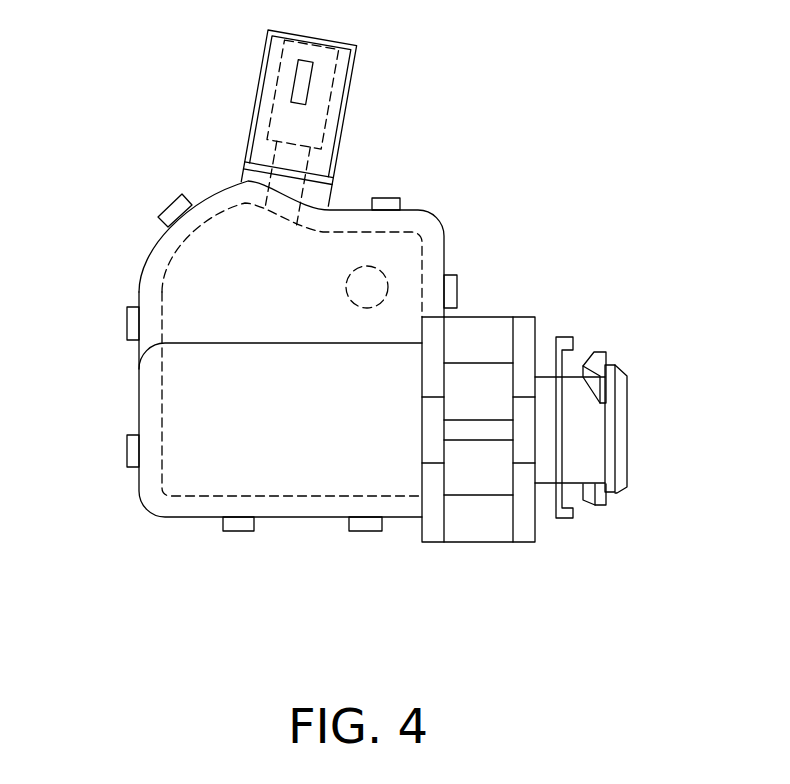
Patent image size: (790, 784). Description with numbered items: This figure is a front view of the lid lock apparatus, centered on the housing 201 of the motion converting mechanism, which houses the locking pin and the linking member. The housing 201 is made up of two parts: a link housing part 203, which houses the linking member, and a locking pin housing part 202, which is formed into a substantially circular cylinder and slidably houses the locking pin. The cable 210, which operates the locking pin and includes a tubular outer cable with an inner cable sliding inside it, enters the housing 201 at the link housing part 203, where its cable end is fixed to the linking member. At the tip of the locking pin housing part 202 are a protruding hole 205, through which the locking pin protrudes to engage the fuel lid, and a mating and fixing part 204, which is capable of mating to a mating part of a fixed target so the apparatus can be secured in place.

The housing 201 is at (140, 178).
The locking pin housing part 202 is at (487, 317).
The link housing part 203 is at (428, 227).
The mating and fixing part 204 is at (602, 490).
The protruding hole 205 is at (627, 430).
The cable 210 is at (350, 88).